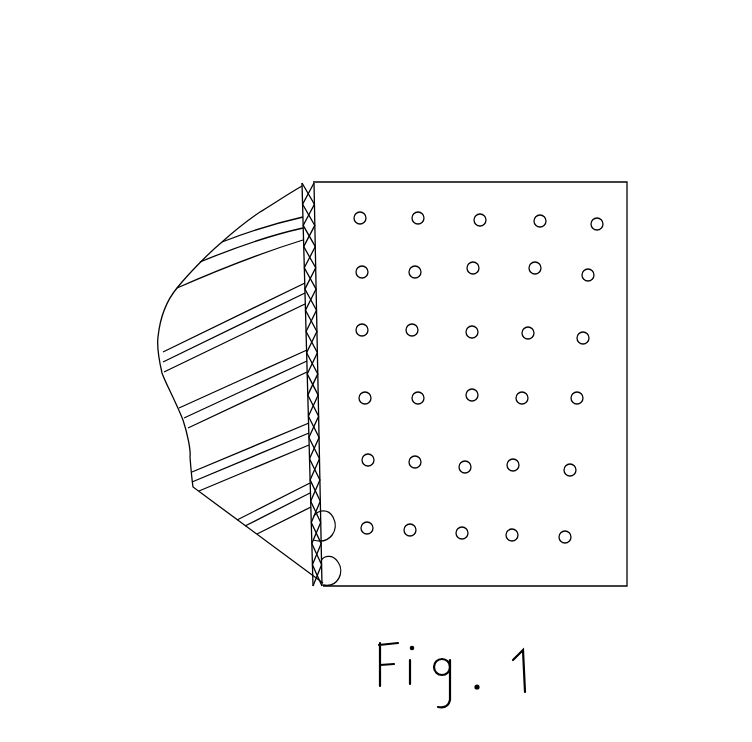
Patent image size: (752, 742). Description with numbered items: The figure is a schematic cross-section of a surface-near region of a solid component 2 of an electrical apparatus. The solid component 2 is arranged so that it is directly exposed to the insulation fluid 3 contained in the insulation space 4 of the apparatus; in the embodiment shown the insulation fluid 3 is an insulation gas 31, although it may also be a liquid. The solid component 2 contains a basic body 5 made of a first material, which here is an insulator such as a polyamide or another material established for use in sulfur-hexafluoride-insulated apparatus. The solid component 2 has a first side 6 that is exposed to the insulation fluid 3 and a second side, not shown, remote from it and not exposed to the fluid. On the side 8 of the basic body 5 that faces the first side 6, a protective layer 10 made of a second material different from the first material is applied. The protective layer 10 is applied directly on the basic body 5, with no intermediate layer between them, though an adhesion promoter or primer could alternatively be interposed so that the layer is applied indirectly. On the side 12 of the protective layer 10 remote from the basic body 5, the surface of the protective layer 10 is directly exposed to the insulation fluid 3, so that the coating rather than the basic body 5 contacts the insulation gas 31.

The solid component 2 is at (232, 192).
The insulation fluid 3 is at (540, 217).
The insulation gas 31 is at (478, 377).
The insulation space 4 is at (447, 208).
The basic body 5 is at (183, 380).
The first side of the solid component 6 is at (313, 532).
The side of the basic body facing the first side 8 is at (303, 263).
The protective layer 10 is at (307, 195).
The side of the protective layer remote from the basic body 12 is at (323, 586).